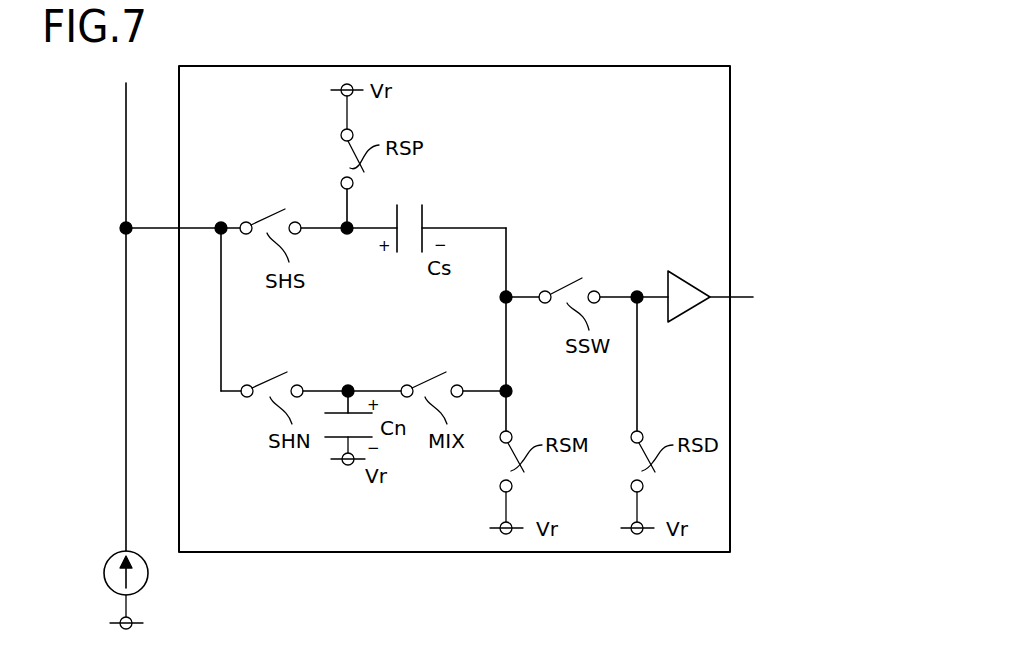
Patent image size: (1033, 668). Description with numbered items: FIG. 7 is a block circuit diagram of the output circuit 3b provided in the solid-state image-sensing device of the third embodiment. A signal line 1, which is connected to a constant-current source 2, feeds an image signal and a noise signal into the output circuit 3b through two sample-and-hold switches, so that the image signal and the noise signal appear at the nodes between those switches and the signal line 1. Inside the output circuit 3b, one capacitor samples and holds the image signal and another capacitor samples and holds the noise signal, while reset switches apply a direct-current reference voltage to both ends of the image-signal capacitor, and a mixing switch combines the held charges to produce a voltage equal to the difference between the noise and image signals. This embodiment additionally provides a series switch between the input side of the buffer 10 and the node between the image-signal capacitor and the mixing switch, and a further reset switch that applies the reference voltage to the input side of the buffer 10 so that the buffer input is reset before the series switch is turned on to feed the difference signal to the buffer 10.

The signal line 1 is at (127, 472).
The constant-current source 2 is at (104, 573).
The output circuit 3b is at (458, 552).
The buffer 10 is at (688, 308).